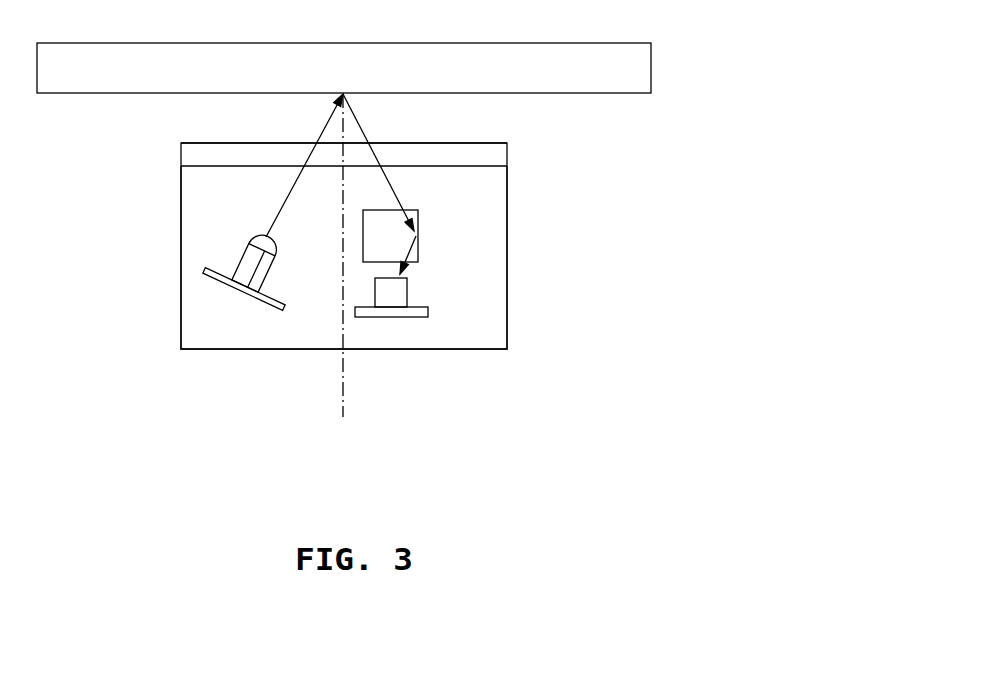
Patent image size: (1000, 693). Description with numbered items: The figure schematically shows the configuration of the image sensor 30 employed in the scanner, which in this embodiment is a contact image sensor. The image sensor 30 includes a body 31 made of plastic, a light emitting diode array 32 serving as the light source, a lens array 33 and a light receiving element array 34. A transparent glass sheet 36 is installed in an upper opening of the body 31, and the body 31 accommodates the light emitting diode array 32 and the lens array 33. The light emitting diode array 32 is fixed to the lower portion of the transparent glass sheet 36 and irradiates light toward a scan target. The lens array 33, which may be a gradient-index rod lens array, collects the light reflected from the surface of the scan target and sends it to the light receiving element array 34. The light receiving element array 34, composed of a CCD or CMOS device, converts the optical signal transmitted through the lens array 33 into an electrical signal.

The image sensor 30 is at (508, 215).
The body 31 is at (487, 312).
The light emitting diode array 32 is at (242, 292).
The lens array 33 is at (418, 255).
The light receiving element array 34 is at (390, 317).
The transparent glass sheet 36 is at (493, 152).